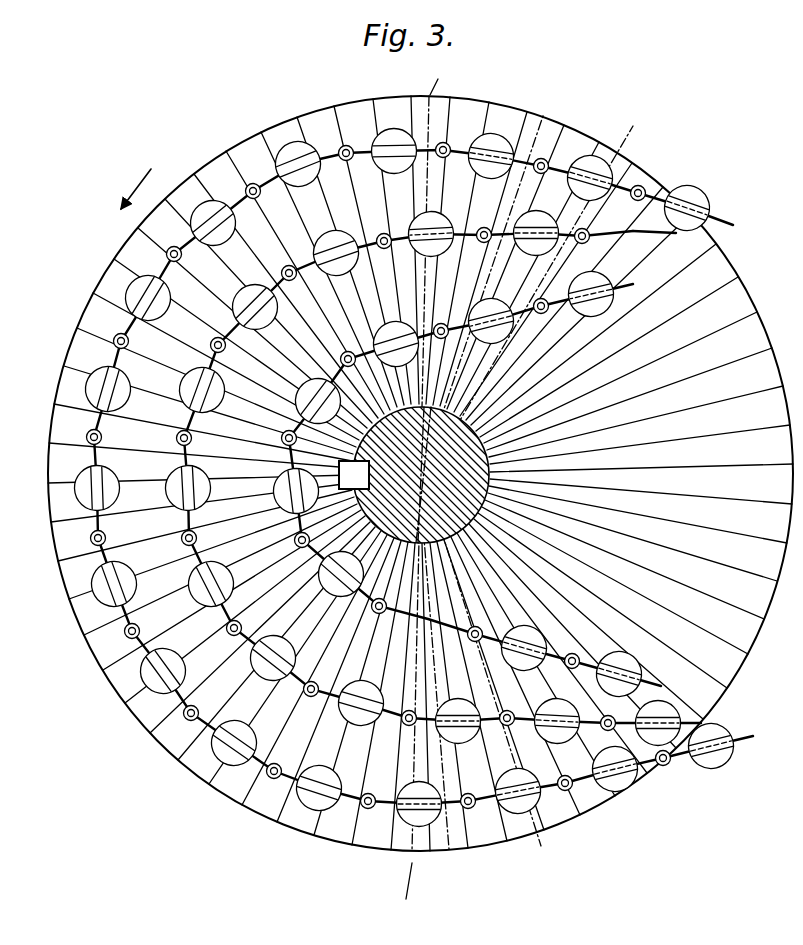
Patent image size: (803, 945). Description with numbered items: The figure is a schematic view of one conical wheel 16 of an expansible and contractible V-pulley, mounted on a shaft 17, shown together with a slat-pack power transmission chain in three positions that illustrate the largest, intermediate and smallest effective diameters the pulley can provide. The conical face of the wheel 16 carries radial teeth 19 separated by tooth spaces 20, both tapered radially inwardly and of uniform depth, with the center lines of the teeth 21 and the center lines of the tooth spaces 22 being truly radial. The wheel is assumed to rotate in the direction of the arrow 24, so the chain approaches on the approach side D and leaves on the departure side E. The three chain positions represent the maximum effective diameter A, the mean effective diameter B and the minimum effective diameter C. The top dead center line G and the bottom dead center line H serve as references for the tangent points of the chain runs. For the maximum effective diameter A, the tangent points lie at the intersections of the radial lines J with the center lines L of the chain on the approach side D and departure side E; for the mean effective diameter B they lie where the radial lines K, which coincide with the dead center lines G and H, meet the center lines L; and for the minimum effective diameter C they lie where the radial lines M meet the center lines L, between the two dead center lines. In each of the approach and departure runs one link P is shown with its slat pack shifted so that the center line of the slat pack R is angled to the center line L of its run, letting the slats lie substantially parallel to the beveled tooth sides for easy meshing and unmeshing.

The conical wheel 16 is at (226, 796).
The shaft 17 is at (428, 472).
The radial teeth 19 is at (392, 86).
The tooth spaces 20 is at (453, 104).
The center line of the teeth 21 is at (530, 114).
The center line of the tooth spaces 22 is at (546, 104).
The arrow 24 is at (136, 178).
The maximum effective diameter A is at (322, 146).
The mean effective diameter B is at (356, 236).
The minimum effective diameter C is at (352, 350).
The approach side D is at (714, 205).
The departure side E is at (726, 732).
The top dead center line G is at (430, 92).
The bottom dead center line H is at (411, 862).
The radial lines J is at (512, 138).
The radial lines K is at (426, 200).
The center line of the chain L is at (730, 222).
The radial lines M is at (412, 300).
The link P is at (625, 190).
The center line of the slat pack R is at (572, 166).